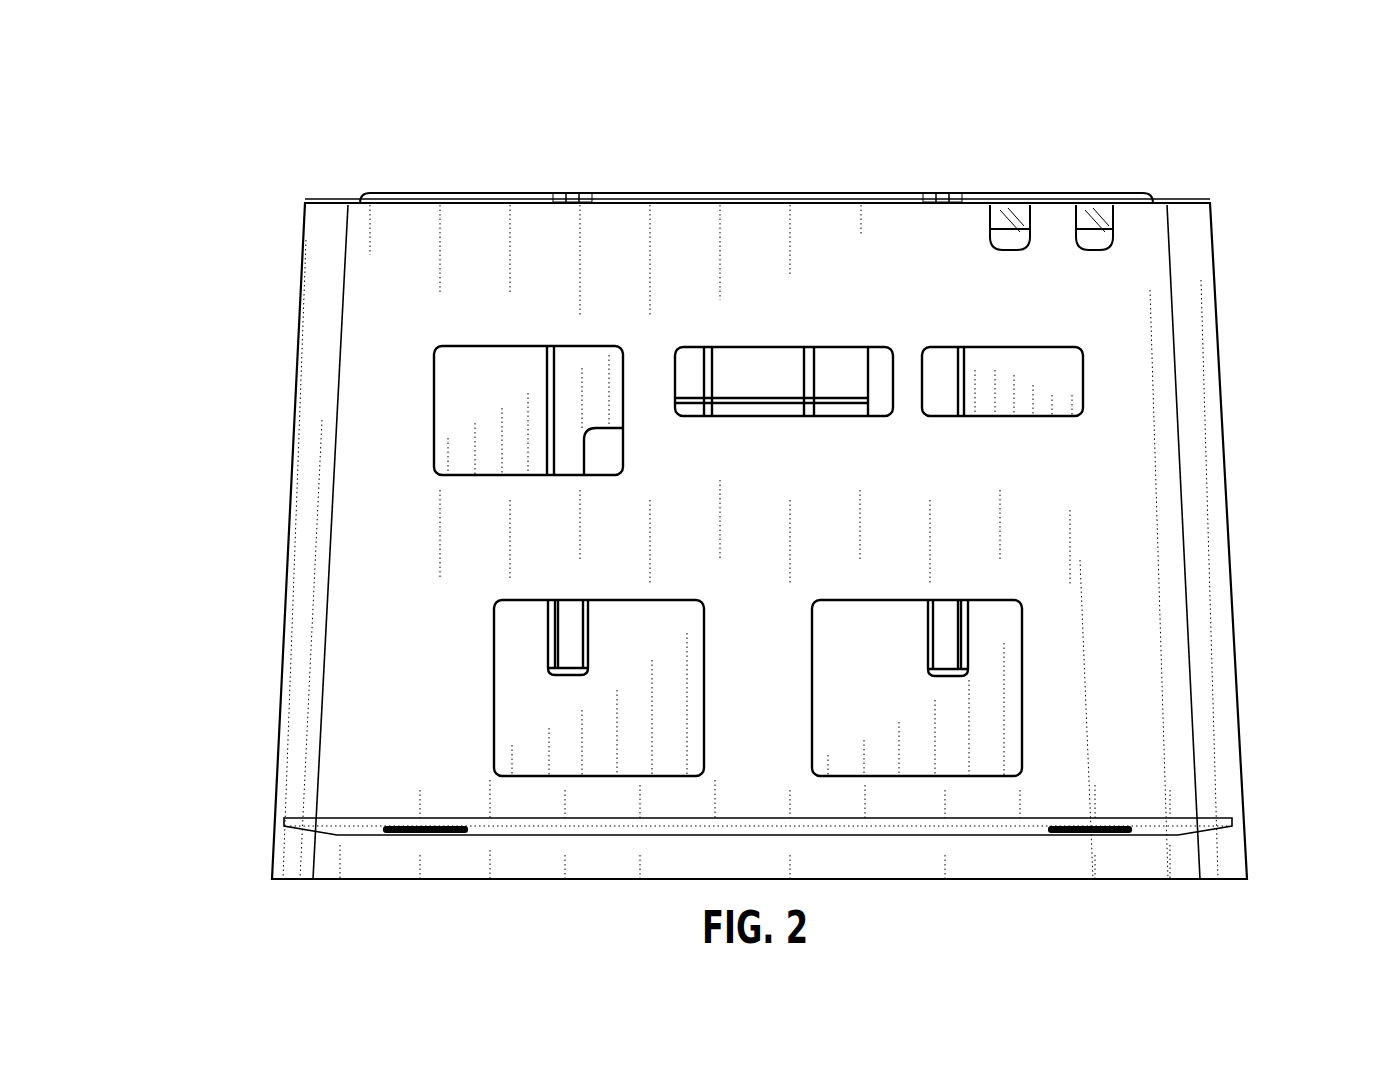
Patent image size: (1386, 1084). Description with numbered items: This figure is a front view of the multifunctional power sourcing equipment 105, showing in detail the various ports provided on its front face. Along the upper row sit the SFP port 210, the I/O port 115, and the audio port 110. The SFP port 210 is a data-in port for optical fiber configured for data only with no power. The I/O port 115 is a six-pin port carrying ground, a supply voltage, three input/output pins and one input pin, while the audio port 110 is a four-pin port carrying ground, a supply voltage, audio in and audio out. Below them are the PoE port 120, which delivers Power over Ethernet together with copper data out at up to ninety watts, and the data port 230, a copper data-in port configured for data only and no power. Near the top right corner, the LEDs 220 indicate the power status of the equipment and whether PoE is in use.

The multifunctional power sourcing equipment 105 is at (268, 96).
The I/O port 115 is at (727, 347).
The audio port 110 is at (1062, 348).
The SFP port 210 is at (434, 408).
The PoE port 120 is at (494, 683).
The data port 230 is at (1022, 656).
The LEDs 220 is at (1128, 211).